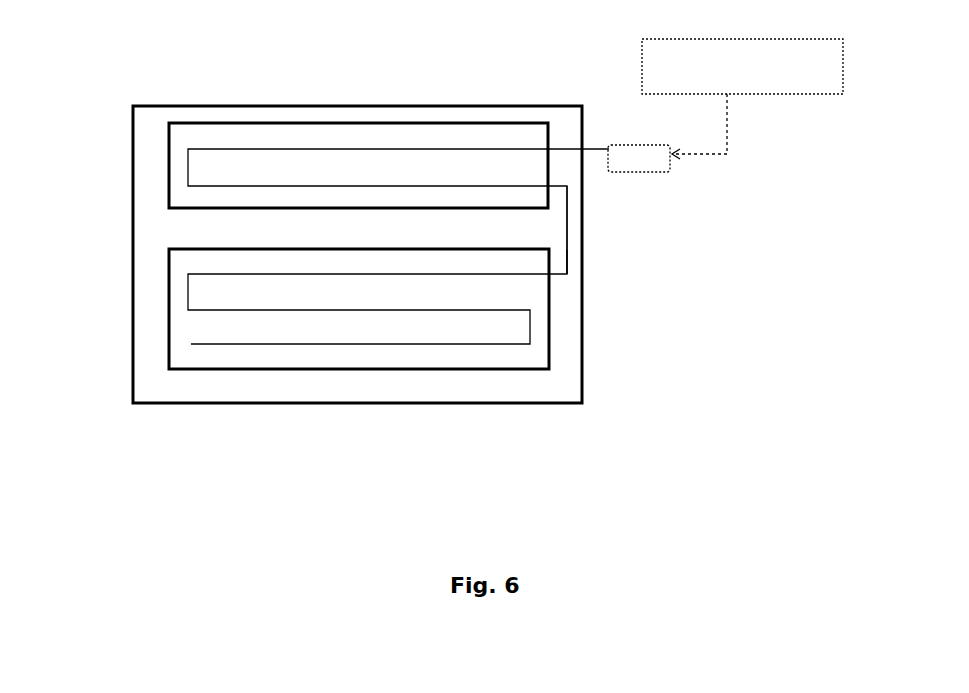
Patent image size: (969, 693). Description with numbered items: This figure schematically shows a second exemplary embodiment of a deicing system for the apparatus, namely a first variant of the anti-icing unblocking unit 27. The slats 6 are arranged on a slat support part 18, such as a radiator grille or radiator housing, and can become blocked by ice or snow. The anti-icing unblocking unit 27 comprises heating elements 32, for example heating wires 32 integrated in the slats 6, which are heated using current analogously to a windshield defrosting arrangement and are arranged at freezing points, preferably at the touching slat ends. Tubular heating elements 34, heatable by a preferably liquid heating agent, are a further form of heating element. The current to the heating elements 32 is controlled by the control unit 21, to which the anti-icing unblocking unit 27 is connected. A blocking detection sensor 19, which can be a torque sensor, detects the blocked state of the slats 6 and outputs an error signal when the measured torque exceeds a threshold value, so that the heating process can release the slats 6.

The slats 6 is at (182, 178).
The slat support part 18 is at (186, 381).
The blocking detection sensor 19 is at (808, 70).
The control unit 21 is at (640, 145).
The anti-icing unblocking unit 27 is at (422, 516).
The heating elements 32 is at (566, 226).
The tubular heating elements 34 is at (567, 263).